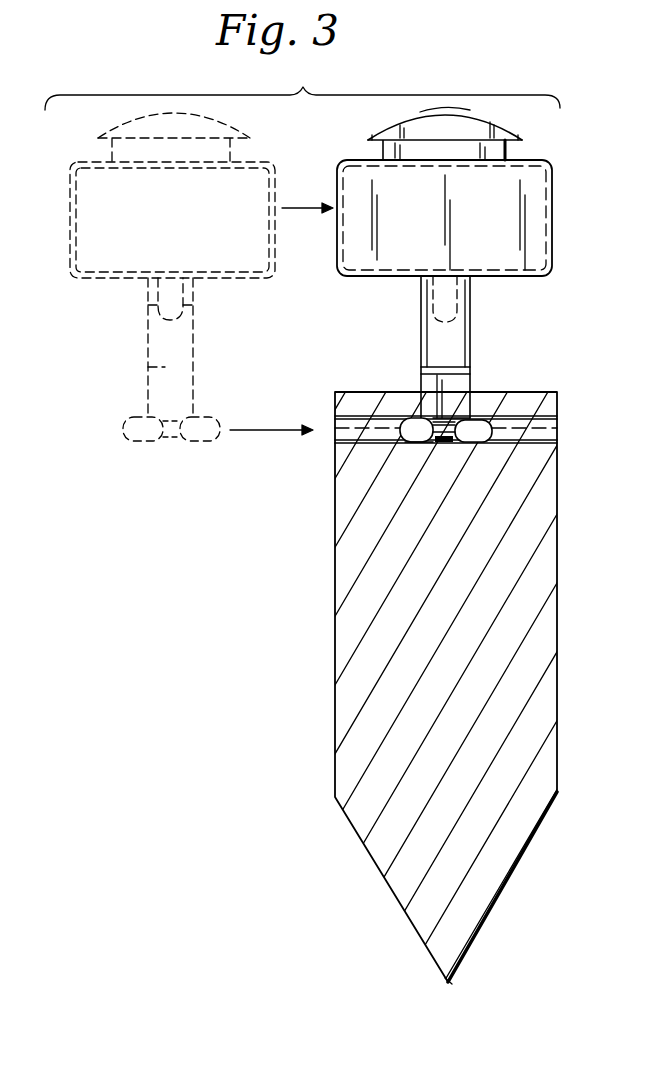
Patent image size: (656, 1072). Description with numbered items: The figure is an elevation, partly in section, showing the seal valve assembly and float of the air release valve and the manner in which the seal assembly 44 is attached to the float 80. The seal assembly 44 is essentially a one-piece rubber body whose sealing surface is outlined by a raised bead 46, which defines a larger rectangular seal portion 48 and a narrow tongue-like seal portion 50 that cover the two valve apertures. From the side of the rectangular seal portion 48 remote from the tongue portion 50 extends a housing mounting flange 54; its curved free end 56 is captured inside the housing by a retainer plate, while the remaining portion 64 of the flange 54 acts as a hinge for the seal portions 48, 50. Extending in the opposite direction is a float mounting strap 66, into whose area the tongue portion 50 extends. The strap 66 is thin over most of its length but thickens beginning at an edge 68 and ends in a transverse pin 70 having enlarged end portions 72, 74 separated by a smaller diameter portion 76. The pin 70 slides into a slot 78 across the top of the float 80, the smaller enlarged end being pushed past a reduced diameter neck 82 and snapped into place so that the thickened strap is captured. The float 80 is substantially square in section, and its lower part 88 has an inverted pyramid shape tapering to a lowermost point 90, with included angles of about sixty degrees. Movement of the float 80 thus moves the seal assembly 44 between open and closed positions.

The seal assembly 44 is at (568, 186).
The raised bead 46 is at (195, 308).
The rectangular seal portion 48 is at (130, 219).
The tongue-like seal portion 50 is at (150, 303).
The housing mounting flange 54 is at (253, 124).
The curved free end 56 is at (417, 132).
The remaining portion of the flange 64 is at (434, 152).
The float mounting strap 66 is at (455, 352).
The edge 68 is at (470, 372).
The transverse pin 70 is at (115, 458).
The enlarged end portion 72 is at (418, 440).
The enlarged end portion 74 is at (520, 430).
The smaller diameter portion 76 is at (445, 442).
The slot 78 is at (350, 440).
The float 80 is at (543, 683).
The reduced diameter neck 82 is at (440, 418).
The lower part of the float 88 is at (511, 866).
The lowermost point 90 is at (450, 984).